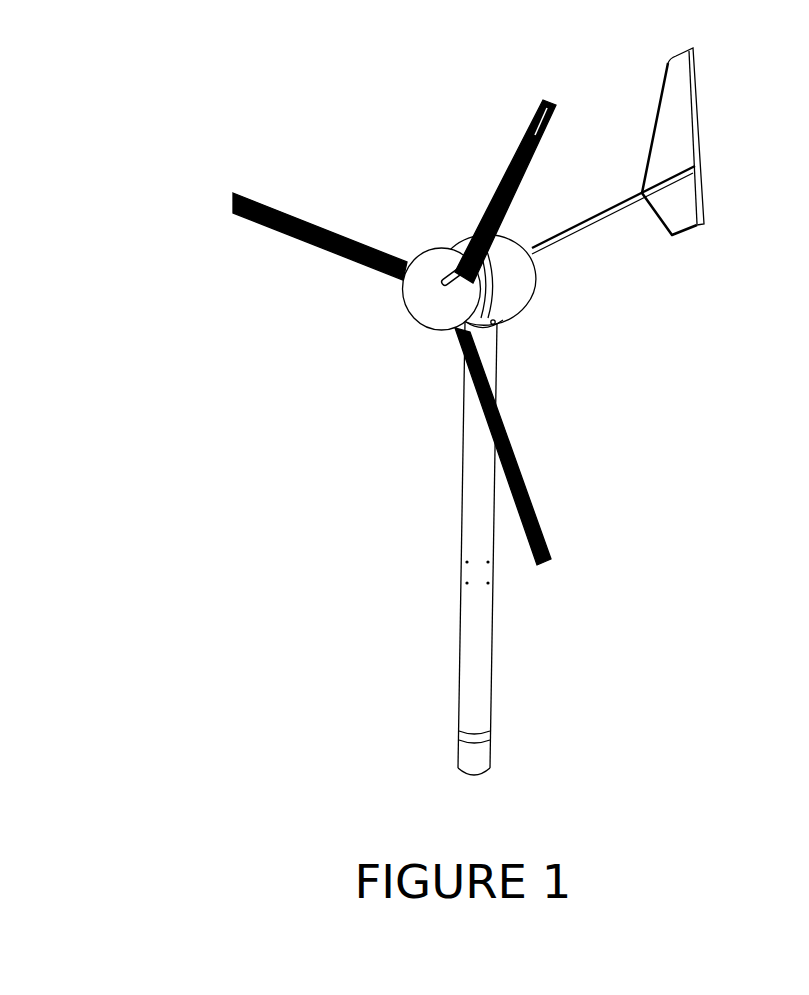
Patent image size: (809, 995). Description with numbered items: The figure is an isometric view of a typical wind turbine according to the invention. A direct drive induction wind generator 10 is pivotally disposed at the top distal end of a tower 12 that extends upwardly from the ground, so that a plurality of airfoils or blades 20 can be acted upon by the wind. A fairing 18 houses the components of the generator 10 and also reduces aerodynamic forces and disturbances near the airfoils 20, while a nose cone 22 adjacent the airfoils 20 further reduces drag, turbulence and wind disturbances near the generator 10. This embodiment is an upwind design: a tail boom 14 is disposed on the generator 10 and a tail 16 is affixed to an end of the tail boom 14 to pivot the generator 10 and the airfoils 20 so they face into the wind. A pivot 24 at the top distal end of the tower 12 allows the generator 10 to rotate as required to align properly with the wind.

The direct drive induction wind generator 10 is at (300, 521).
The tower 12 is at (495, 648).
The tail boom 14 is at (582, 227).
The tail 16 is at (700, 118).
The fairing 18 is at (520, 283).
The airfoils or blades 20 is at (268, 207).
The nose cone 22 is at (408, 297).
The pivot 24 is at (497, 325).